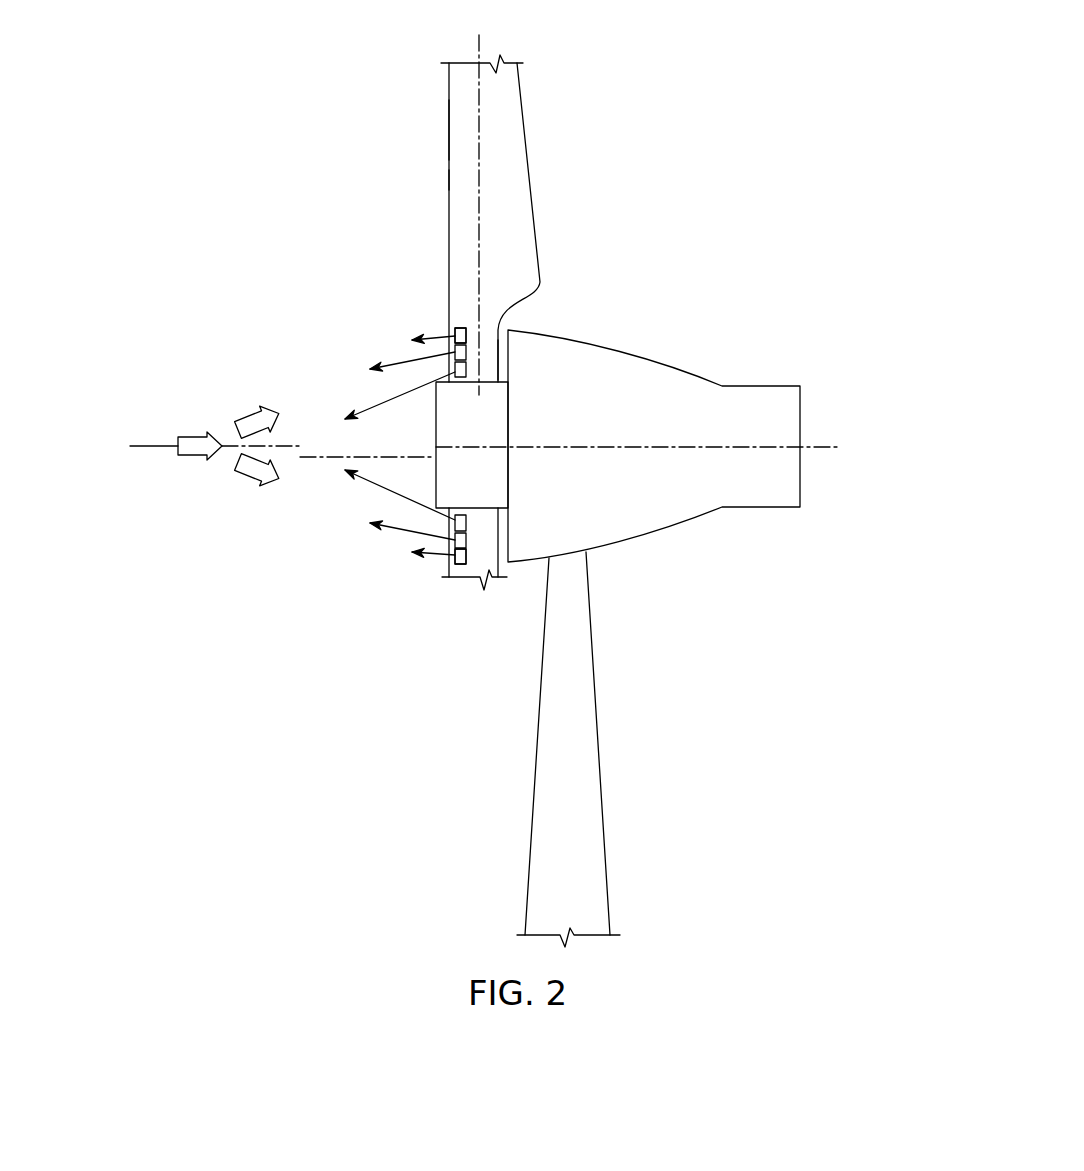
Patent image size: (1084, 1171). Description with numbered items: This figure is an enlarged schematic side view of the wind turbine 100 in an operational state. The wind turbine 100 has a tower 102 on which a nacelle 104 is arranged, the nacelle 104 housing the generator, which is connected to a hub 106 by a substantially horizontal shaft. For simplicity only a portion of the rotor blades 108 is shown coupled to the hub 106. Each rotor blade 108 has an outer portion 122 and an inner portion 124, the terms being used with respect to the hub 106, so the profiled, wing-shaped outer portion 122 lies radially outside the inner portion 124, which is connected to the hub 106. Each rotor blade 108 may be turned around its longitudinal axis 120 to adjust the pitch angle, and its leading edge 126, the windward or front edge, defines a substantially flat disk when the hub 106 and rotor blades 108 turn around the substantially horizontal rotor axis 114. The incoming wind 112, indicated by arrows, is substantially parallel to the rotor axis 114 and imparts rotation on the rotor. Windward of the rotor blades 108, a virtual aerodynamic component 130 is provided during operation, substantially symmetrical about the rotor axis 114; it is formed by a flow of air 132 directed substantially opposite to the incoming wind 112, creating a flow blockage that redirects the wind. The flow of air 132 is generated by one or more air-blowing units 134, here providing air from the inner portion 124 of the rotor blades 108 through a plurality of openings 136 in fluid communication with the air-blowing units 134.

The wind turbine 100 is at (488, 487).
The tower 102 is at (578, 668).
The nacelle 104 is at (688, 388).
The hub 106 is at (494, 430).
The rotor blade 108 is at (513, 174).
The incoming wind 112 is at (254, 488).
The rotor axis 114 is at (822, 452).
The longitudinal axis 120 is at (482, 40).
The outer portion 122 is at (462, 179).
The inner portion 124 is at (487, 353).
The leading edge 126 is at (448, 128).
The virtual aerodynamic component 130 is at (333, 372).
The flow of air 132 is at (437, 338).
The air-blowing unit 134 is at (457, 327).
The openings 136 is at (467, 546).